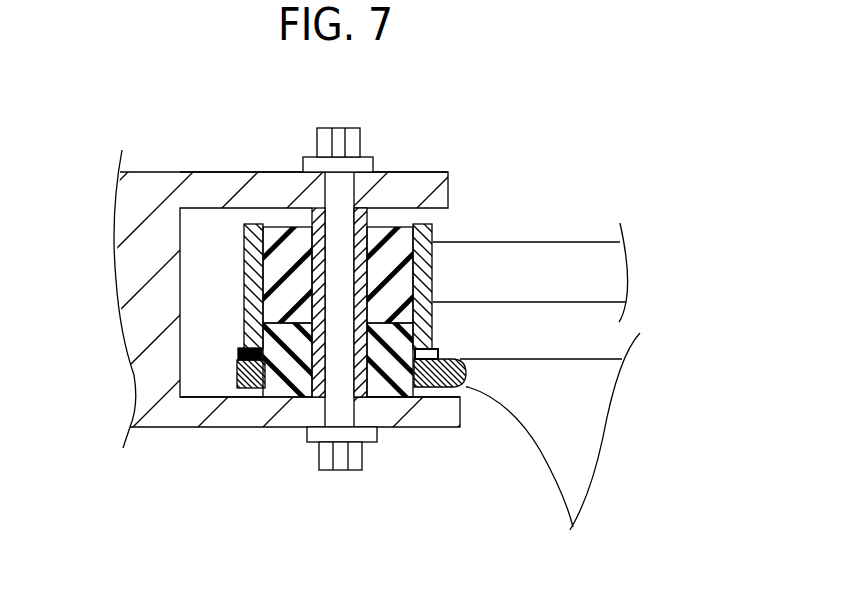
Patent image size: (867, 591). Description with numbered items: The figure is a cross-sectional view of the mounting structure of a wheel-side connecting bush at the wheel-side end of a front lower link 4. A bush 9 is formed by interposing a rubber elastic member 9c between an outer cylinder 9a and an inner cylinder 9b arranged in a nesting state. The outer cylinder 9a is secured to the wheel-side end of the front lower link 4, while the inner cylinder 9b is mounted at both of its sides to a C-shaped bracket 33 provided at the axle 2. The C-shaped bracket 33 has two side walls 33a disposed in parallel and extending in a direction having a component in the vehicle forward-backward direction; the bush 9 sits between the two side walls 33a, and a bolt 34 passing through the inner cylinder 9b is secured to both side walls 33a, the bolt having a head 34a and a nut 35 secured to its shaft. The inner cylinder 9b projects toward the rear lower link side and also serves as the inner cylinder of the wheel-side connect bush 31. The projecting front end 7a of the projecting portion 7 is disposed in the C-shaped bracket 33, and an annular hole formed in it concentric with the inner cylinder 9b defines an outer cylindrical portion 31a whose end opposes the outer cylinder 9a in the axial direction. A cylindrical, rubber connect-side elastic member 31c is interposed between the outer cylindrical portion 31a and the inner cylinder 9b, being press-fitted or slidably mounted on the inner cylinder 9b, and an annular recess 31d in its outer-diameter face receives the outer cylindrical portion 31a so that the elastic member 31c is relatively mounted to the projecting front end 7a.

The axle 2 is at (137, 217).
The front lower link 4 is at (537, 252).
The projecting portion 7 is at (587, 440).
The projecting front end 7a is at (492, 360).
The bush 9 is at (355, 295).
The outer cylinder 9a is at (423, 230).
The inner cylinder 9b is at (357, 208).
The elastic member 9c is at (390, 237).
The wheel-side connect bush 31 is at (447, 345).
The outer cylindrical portion 31a is at (250, 388).
The connect-side elastic member 31c is at (388, 383).
The annular recess 31d is at (435, 388).
The C-shaped bracket 33 is at (173, 172).
The side walls 33a is at (217, 185).
The bolt 34 is at (342, 404).
The head of the bolt 34a is at (340, 460).
The nut 35 is at (338, 135).